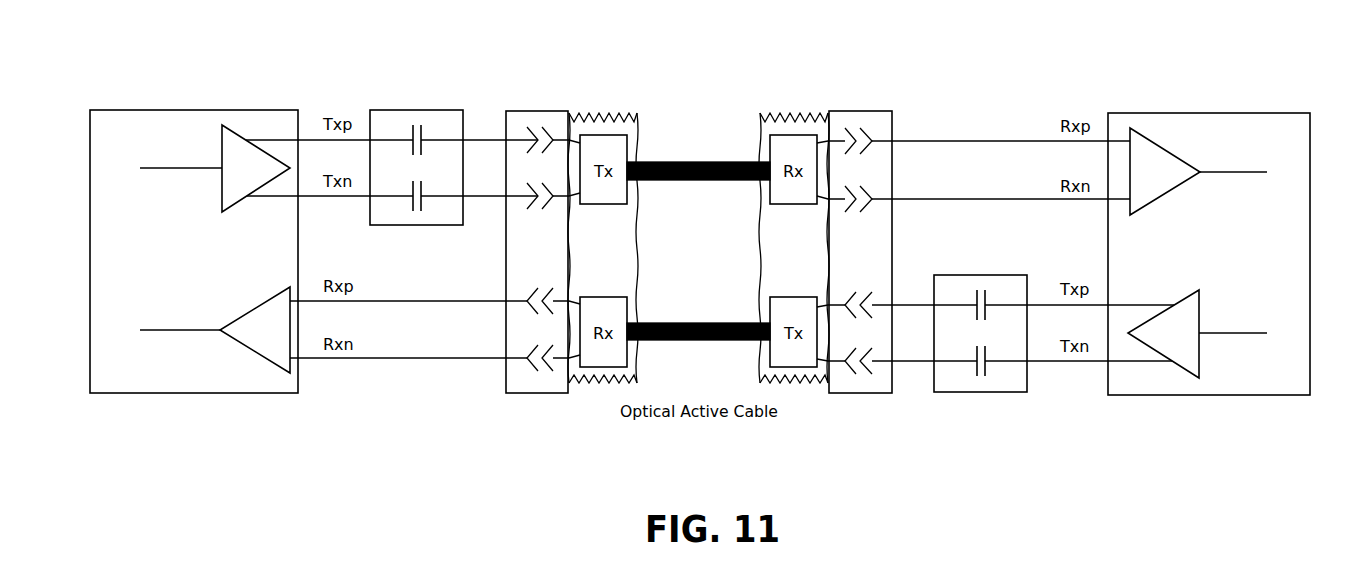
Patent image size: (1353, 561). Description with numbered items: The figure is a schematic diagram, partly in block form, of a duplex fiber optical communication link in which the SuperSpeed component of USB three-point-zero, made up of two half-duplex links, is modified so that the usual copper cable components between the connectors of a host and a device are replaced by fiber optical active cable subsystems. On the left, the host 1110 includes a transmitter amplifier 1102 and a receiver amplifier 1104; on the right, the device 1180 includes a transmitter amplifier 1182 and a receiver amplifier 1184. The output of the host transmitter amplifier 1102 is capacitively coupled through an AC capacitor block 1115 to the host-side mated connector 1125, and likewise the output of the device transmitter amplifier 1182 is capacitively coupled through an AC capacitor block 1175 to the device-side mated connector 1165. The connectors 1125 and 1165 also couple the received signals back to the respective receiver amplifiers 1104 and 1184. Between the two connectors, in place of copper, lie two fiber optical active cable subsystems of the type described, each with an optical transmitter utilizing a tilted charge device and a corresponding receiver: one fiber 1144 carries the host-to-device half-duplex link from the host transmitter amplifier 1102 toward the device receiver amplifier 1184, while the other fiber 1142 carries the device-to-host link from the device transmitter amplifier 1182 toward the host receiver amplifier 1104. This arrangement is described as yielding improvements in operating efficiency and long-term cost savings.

The host 1110 is at (170, 133).
The transmitter amplifier 1102 is at (234, 196).
The receiver amplifier 1104 is at (253, 337).
The capacitive coupling block 1115 is at (390, 127).
The connector 1125 is at (518, 110).
The fiber 1144 is at (657, 150).
The fiber 1142 is at (657, 310).
The connector 1165 is at (877, 125).
The capacitive coupling block 1175 is at (1018, 377).
The device 1180 is at (1220, 138).
The receiver amplifier 1184 is at (1160, 187).
The transmitter amplifier 1182 is at (1192, 343).